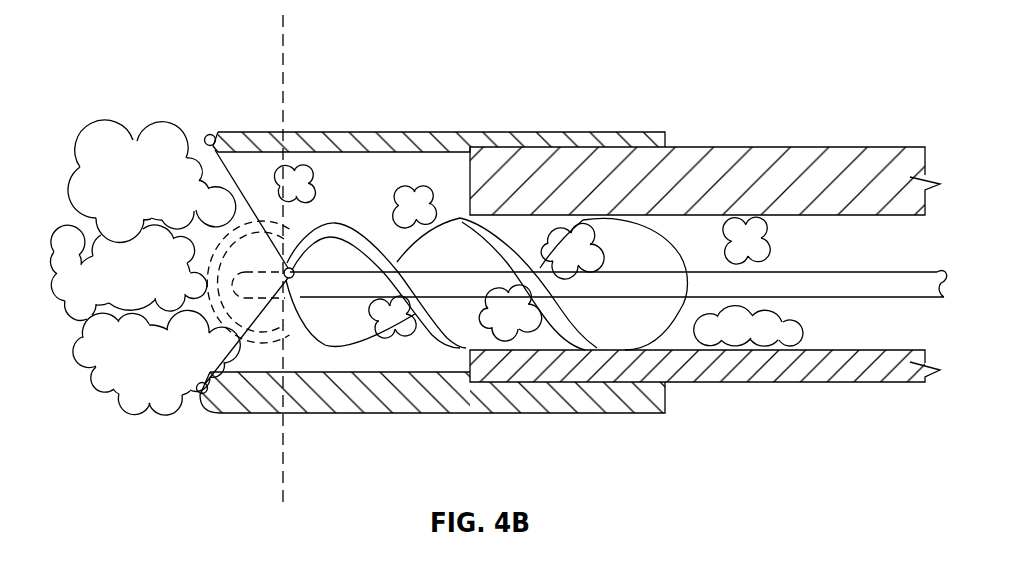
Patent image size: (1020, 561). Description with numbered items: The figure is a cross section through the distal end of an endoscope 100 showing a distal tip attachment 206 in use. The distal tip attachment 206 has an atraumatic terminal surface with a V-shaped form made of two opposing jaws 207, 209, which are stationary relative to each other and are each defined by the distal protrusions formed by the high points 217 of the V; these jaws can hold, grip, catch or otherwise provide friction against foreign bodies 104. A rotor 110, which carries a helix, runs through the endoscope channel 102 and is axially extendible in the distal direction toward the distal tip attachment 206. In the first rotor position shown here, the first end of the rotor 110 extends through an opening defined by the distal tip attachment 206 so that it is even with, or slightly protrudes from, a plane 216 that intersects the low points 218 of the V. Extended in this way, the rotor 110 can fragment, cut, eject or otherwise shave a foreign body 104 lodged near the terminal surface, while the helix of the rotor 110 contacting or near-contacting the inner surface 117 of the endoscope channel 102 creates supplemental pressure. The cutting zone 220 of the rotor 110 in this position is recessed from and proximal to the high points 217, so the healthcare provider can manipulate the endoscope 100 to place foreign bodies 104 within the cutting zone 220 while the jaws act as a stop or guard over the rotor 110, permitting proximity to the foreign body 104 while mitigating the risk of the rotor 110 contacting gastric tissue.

The endoscope 100 is at (628, 433).
The endoscope channel 102 is at (780, 207).
The foreign body 104 is at (108, 140).
The rotor 110 is at (647, 232).
The inner surface 117 is at (713, 233).
The distal tip attachment 206 is at (210, 133).
The jaw 207 is at (267, 158).
The jaw 209 is at (247, 400).
The plane 216 is at (285, 462).
The high points 217 is at (204, 137).
The low points 218 is at (292, 280).
The cutting zone 220 is at (208, 276).